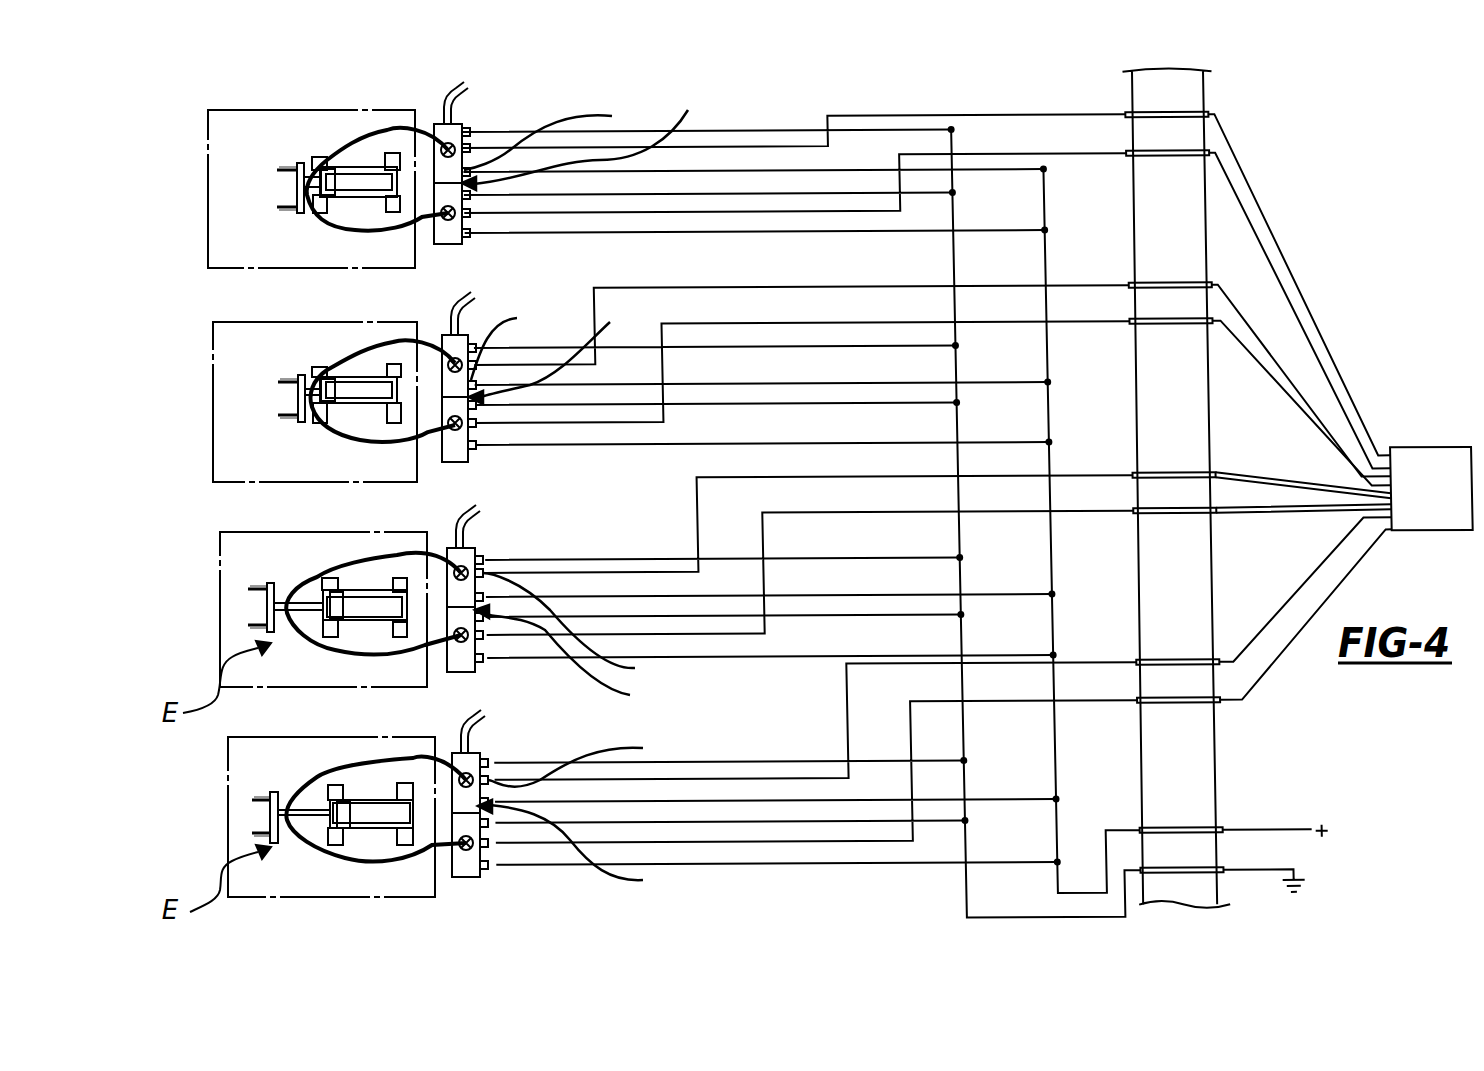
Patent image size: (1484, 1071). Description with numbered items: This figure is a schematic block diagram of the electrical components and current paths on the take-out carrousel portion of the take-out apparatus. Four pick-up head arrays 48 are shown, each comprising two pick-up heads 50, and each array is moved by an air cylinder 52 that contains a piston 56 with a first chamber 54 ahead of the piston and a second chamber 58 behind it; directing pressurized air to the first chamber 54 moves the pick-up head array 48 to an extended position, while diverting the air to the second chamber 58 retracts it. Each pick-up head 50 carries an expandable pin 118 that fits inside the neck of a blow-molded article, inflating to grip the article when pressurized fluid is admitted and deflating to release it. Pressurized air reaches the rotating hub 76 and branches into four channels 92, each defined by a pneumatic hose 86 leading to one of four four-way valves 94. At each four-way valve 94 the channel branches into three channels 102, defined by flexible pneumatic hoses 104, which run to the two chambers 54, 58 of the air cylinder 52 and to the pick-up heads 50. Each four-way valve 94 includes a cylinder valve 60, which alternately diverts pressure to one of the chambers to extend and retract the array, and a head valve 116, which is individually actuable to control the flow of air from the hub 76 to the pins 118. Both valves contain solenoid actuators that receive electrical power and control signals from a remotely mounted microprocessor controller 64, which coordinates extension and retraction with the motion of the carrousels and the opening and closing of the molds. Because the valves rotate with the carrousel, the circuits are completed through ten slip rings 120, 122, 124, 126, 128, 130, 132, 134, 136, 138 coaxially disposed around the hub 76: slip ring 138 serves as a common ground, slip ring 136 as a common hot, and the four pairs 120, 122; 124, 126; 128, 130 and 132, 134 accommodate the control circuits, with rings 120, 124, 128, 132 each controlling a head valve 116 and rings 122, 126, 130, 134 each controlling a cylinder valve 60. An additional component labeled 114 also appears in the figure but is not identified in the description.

The pick-up head array 48 is at (288, 146).
The pick-up head 50 is at (279, 205).
The air cylinder 52 is at (360, 194).
The first chamber 54 is at (391, 168).
The piston 56 is at (375, 173).
The second chamber 58 is at (360, 217).
The cylinder valve 60 is at (480, 196).
The controller 64 is at (1433, 458).
The hub 76 is at (1208, 255).
The pneumatic line or hose 86 is at (545, 425).
The channel 92 is at (448, 100).
The four-way valve 94 is at (587, 488).
The channel 102 is at (376, 495).
The pneumatic line or hose 104 is at (417, 237).
The upper yoke 114 is at (325, 185).
The head valve 116 is at (570, 445).
The expandable pin 118 is at (278, 169).
The slip ring 120 is at (1195, 124).
The slip ring 122 is at (1190, 170).
The slip ring 124 is at (1199, 288).
The slip ring 126 is at (1198, 338).
The slip ring 128 is at (1195, 480).
The slip ring 130 is at (1197, 520).
The slip ring 132 is at (1190, 667).
The slip ring 134 is at (1192, 707).
The slip ring 136 is at (1197, 836).
The slip ring 138 is at (1196, 877).